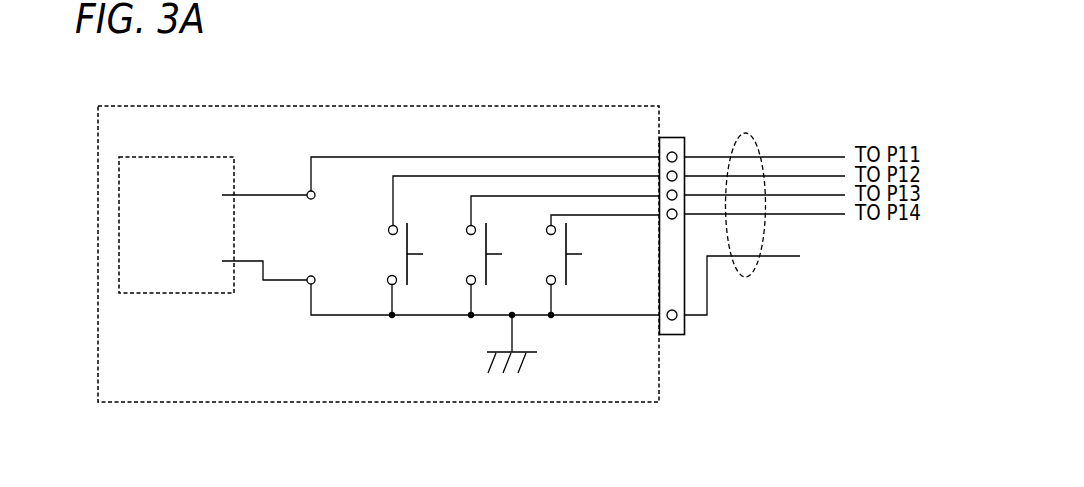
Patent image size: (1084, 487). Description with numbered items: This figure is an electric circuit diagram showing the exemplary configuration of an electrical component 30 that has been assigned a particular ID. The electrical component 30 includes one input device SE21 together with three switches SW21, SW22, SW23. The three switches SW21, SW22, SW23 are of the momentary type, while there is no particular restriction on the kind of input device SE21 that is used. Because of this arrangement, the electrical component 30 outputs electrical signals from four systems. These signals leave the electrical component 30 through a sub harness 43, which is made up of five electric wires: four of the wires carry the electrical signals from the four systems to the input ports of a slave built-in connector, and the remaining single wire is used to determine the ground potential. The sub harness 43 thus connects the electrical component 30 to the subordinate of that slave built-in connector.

The electrical component 30 is at (152, 402).
The sub harness 43 is at (749, 134).
The input device SE21 is at (207, 293).
The switch SW21 is at (388, 225).
The switch SW22 is at (468, 225).
The switch SW23 is at (555, 285).